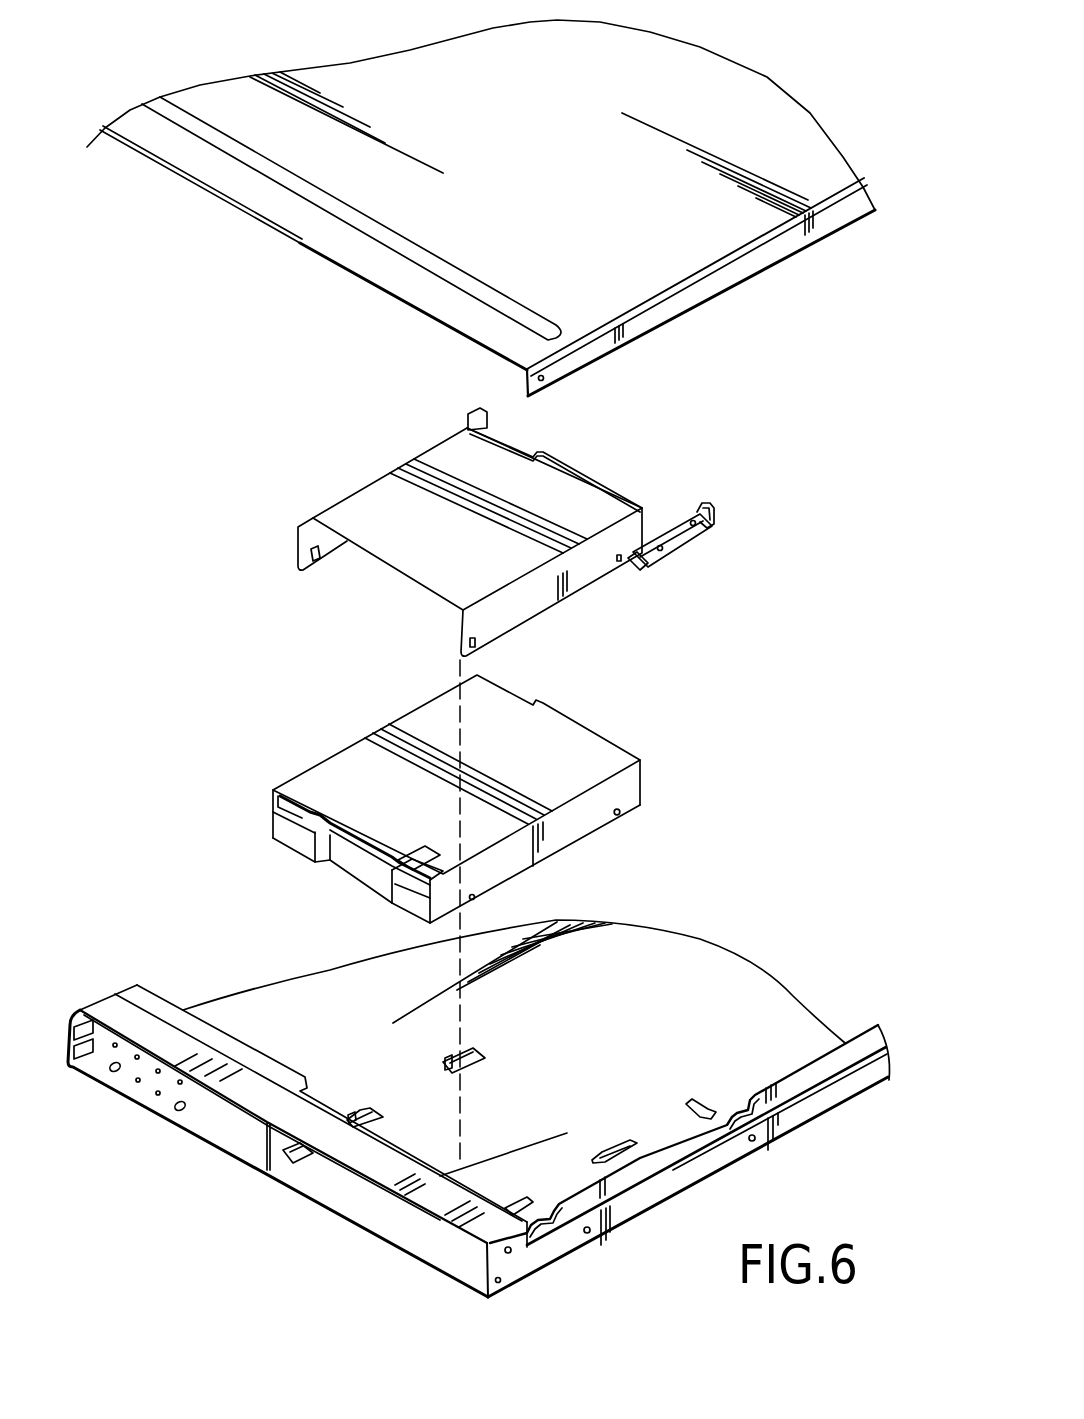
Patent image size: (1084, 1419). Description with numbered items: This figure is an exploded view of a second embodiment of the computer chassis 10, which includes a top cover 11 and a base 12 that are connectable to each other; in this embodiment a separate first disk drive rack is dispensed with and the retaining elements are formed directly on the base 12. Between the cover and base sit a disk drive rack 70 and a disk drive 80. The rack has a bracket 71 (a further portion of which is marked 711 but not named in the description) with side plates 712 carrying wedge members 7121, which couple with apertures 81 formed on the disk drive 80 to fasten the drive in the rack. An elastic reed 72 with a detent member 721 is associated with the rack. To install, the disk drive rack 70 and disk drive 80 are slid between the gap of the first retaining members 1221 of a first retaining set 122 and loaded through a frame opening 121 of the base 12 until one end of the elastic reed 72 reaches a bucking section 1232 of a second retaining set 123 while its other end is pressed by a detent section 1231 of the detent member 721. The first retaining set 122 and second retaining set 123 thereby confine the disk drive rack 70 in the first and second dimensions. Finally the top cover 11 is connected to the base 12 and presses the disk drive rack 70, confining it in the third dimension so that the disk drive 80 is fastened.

The computer chassis 10 is at (506, 658).
The top cover 11 is at (813, 252).
The base 12 is at (481, 1108).
The disk drive rack 70 is at (496, 523).
The bracket 71 is at (415, 558).
The rear lip of top plate 711 is at (553, 490).
The side plates 712 is at (282, 565).
The wedge members 7121 is at (315, 567).
The elastic reed 72 is at (701, 524).
The detent member 721 is at (697, 510).
The disk drive 80 is at (512, 799).
The apertures 81 is at (622, 812).
The frame opening 121 is at (351, 1196).
The first retaining set 122 is at (338, 1083).
The first retaining members 1221 is at (372, 1062).
The second retaining set 123 is at (665, 1080).
The detent section 1231 is at (702, 1100).
The bucking section 1232 is at (632, 1138).